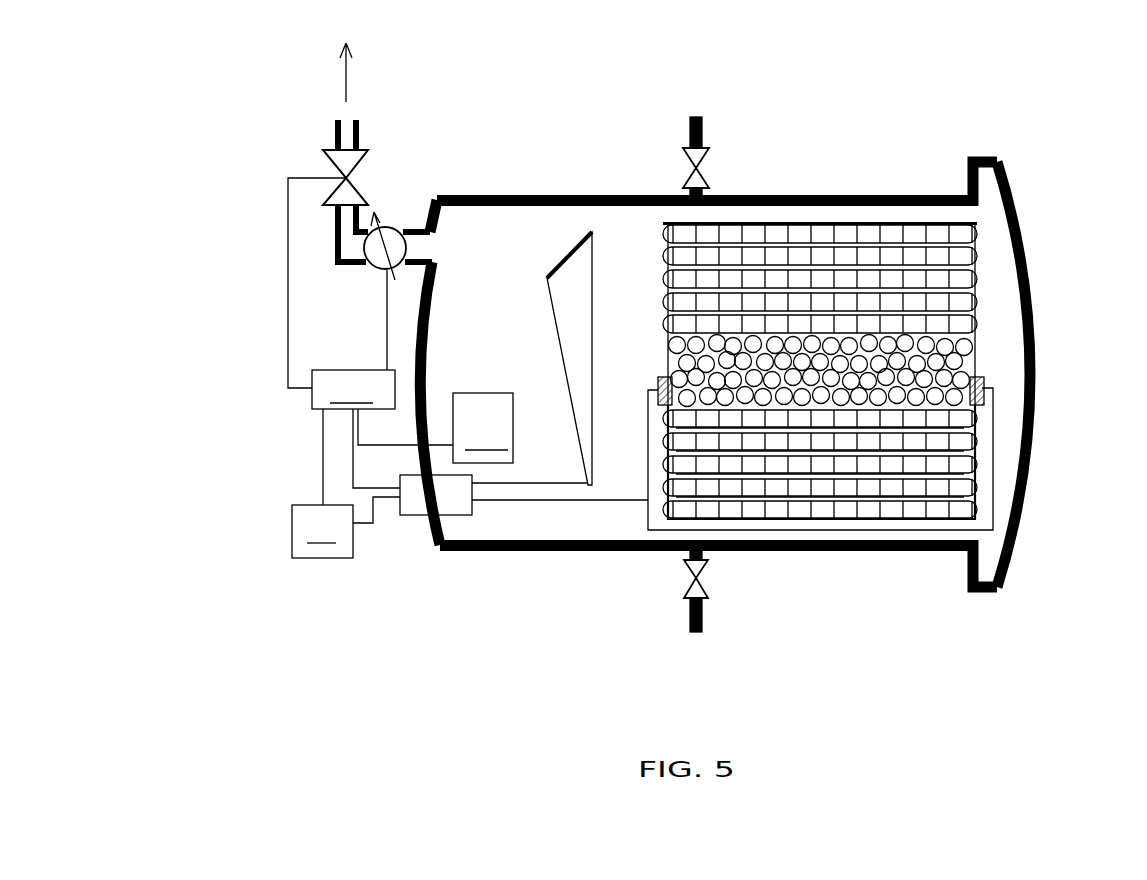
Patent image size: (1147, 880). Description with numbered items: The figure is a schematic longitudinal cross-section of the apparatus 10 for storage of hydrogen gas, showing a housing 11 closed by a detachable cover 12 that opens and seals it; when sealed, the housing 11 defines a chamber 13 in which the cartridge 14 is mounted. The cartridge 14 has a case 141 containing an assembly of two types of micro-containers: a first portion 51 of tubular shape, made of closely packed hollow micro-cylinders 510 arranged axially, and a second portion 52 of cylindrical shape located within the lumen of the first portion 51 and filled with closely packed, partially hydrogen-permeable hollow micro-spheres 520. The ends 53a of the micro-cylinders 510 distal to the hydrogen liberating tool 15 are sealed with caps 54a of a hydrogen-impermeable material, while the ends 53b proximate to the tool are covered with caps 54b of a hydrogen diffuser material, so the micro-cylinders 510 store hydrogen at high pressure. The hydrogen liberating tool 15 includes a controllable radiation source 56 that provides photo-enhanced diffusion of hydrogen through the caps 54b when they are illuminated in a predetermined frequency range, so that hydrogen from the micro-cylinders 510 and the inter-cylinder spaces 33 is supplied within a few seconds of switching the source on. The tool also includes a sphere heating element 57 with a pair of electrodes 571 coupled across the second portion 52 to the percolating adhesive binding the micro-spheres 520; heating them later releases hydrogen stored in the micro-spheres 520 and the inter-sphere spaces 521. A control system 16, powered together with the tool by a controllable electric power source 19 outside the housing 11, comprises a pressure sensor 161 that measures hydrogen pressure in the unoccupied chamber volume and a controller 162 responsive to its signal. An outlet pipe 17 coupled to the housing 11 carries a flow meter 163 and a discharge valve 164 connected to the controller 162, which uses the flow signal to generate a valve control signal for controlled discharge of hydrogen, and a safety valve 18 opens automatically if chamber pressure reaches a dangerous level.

The apparatus for storage of hydrogen gas 10 is at (967, 92).
The housing 11 is at (805, 195).
The detachable cover 12 is at (1032, 265).
The chamber 13 is at (487, 552).
The cartridge 14 is at (878, 222).
The case 141 is at (916, 222).
The hydrogen liberating tool 15 is at (548, 248).
The control system 16 is at (333, 590).
The outlet pipe 17 is at (340, 264).
The safety valve 18 is at (699, 578).
The controllable electric power source 19 is at (322, 483).
The pressure sensor 161 is at (435, 428).
The controller 162 is at (341, 293).
The flow meter 163 is at (388, 212).
The discharge valve 164 is at (360, 178).
The inter-cylinder spaces 33 is at (883, 500).
The first portion 51 is at (987, 252).
The second portion 52 is at (978, 363).
The ends of the micro-cylinders distal to the hydrogen liberating tool 53a is at (650, 268).
The ends of the micro-cylinders proximate to the hydrogen liberating tool 53b is at (988, 291).
The caps of impermeable material 54a is at (978, 228).
The caps of hydrogen diffuser material 54b is at (662, 225).
The controllable radiation source 56 is at (570, 255).
The sphere heating element 57 is at (632, 432).
The electrodes 571 is at (993, 390).
The micro-cylinders 510 is at (903, 512).
The micro-spheres 520 is at (818, 425).
The inter-sphere spaces 521 is at (940, 430).